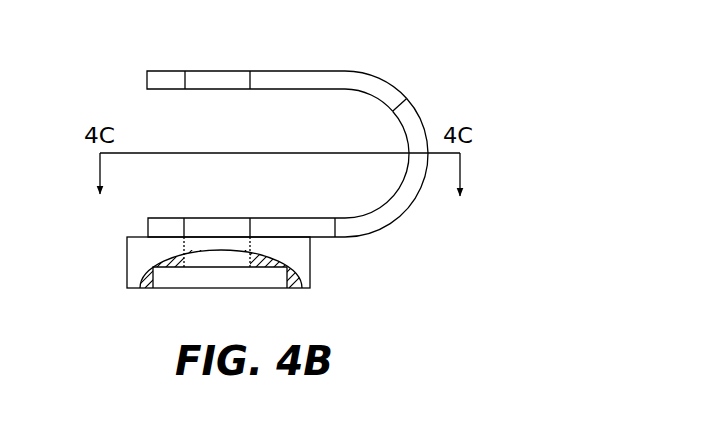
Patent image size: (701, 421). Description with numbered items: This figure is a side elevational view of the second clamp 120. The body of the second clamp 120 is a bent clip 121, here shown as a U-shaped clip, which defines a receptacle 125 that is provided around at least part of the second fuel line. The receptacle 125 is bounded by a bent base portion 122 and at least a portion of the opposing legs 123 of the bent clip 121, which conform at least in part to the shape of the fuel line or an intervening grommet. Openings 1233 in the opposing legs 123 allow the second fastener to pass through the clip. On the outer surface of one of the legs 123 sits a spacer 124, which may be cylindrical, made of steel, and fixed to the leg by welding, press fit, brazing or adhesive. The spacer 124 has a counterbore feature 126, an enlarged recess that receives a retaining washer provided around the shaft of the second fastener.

The second clamp 120 is at (346, 143).
The bent clip 121 is at (382, 80).
The bent base portion 122 is at (414, 197).
The opposing legs 123 is at (273, 77).
The openings 1233 is at (205, 70).
The spacer 124 is at (186, 293).
The receptacle 125 is at (160, 168).
The counterbore feature 126 is at (198, 288).